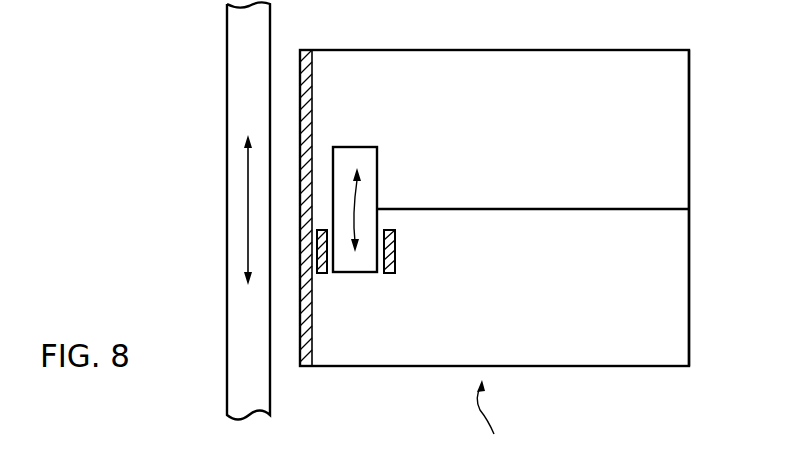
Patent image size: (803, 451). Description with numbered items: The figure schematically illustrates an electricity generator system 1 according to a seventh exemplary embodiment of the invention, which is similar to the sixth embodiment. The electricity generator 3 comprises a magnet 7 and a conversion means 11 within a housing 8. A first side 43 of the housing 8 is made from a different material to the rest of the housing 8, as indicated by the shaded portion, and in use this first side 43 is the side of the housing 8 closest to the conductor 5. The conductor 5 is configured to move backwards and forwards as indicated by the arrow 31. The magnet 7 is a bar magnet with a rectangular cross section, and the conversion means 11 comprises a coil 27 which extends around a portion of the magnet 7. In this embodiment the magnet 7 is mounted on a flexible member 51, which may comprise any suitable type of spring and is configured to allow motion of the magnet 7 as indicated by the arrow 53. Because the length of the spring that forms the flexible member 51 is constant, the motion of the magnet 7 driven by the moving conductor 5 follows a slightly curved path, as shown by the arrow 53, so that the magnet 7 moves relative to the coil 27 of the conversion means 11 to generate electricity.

The electricity generator system 1 is at (492, 411).
The electricity generator 3 is at (689, 156).
The conductor 5 is at (227, 103).
The magnet 7 is at (377, 165).
The housing 8 is at (473, 50).
The conversion means 11 is at (396, 249).
The coil 27 is at (322, 273).
The arrow 31 is at (247, 222).
The first side 43 is at (307, 50).
The flexible member 51 is at (562, 209).
The arrow 53 is at (357, 170).